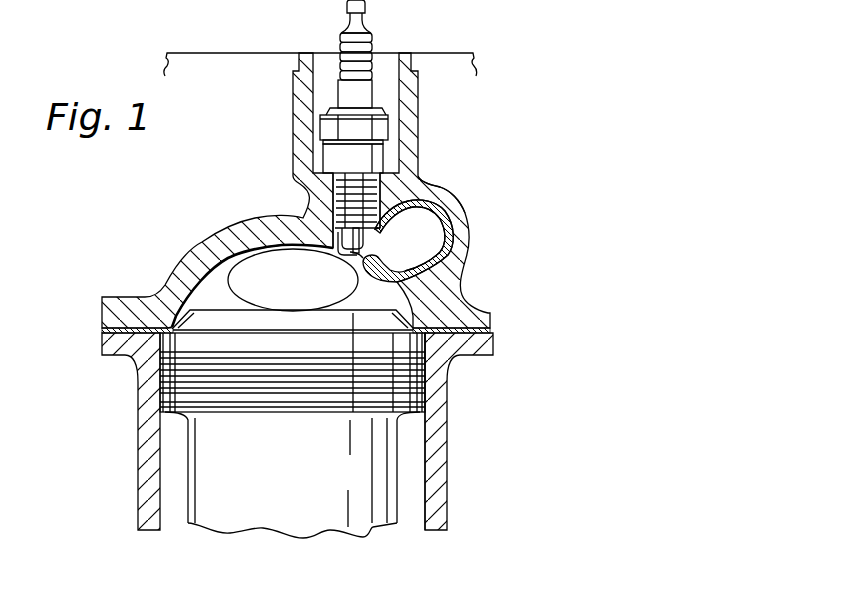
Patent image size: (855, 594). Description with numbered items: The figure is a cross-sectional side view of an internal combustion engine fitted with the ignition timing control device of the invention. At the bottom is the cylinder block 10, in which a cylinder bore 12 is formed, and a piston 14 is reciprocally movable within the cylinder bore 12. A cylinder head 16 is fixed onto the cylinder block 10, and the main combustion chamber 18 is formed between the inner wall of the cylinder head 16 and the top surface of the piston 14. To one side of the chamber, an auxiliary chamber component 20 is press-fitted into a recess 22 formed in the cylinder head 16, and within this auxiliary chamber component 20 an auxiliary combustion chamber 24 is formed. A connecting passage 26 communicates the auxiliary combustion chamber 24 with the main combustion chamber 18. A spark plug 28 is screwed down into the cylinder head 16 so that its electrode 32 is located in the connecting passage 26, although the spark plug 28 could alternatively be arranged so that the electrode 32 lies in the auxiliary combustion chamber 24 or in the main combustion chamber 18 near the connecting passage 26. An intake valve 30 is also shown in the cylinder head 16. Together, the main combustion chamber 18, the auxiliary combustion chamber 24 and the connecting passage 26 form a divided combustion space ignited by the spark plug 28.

The cylinder block 10 is at (442, 420).
The cylinder bore 12 is at (425, 452).
The piston 14 is at (362, 493).
The cylinder head 16 is at (176, 281).
The main combustion chamber 18 is at (330, 293).
The auxiliary chamber component 20 is at (458, 298).
The recess 22 is at (440, 184).
The auxiliary combustion chamber 24 is at (427, 223).
The connecting passage 26 is at (450, 268).
The spark plug 28 is at (352, 99).
The intake valve 30 is at (265, 267).
The electrode 32 is at (333, 250).